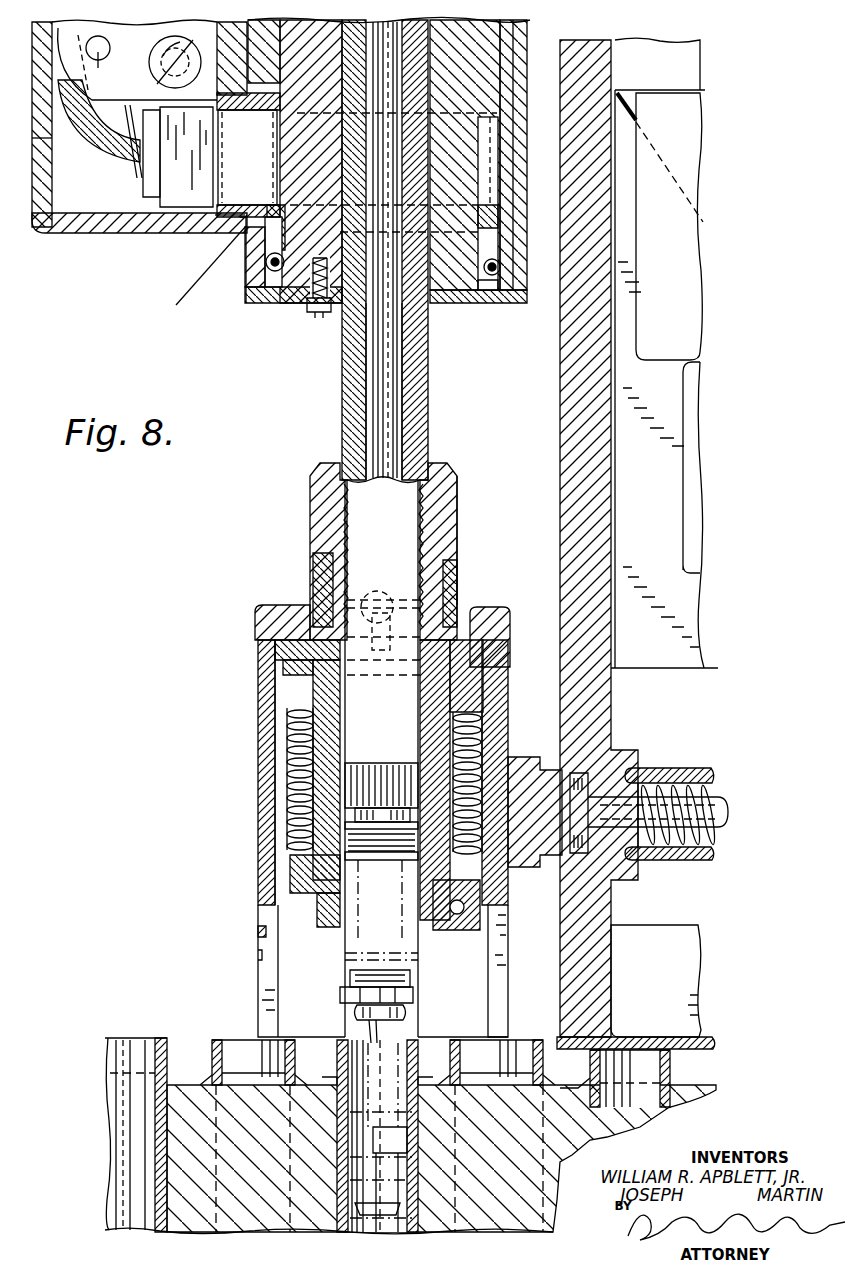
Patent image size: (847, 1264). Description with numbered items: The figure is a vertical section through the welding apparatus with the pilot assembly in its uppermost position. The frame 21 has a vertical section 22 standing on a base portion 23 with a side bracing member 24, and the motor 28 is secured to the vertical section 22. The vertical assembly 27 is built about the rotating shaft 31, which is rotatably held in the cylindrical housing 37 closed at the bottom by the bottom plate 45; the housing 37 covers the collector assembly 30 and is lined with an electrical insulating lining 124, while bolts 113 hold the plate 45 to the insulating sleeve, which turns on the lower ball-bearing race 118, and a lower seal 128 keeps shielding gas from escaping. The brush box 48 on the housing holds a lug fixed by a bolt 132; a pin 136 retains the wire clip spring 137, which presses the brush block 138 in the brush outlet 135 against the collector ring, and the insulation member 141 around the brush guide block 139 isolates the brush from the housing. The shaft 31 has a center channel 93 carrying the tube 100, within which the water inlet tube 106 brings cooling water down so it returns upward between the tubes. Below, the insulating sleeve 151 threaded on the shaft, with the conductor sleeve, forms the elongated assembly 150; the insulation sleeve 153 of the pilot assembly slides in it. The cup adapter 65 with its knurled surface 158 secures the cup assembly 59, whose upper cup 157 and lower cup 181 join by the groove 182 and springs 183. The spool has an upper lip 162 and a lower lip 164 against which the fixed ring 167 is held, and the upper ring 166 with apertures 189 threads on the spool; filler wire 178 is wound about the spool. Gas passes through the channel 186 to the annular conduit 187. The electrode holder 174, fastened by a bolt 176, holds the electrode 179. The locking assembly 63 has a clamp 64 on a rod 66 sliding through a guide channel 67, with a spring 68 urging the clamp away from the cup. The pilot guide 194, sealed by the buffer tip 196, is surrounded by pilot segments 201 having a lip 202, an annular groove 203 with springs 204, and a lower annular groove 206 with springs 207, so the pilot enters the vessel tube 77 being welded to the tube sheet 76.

The frame 21 is at (622, 706).
The vertical section 22 is at (611, 503).
The base portion 23 is at (716, 1042).
The side bracing member 24 is at (682, 186).
The vertical assembly 27 is at (241, 270).
The motor 28 is at (655, 265).
The collector assembly 30 is at (217, 247).
The shaft 31 is at (415, 149).
The cylindrical housing 37 is at (527, 210).
The bottom plate 45 is at (256, 301).
The brush box 48 is at (74, 243).
The cup assembly 59 is at (258, 785).
The locking assembly 63 is at (691, 878).
The clamp 64 is at (516, 870).
The cup adapter 65 is at (255, 616).
The rod 66 is at (731, 818).
The guide channel 67 is at (713, 856).
The spring 68 is at (712, 801).
The tube sheet 76 is at (432, 1237).
The vessel tube 77 is at (415, 1135).
The center channel 93 is at (403, 327).
The tube 100 is at (405, 308).
The water inlet tube 106 is at (386, 234).
The bolt 113 is at (318, 316).
The lower ball-bearing race 118 is at (288, 305).
The electrical insulating lining 124 is at (278, 71).
The lower seal 128 is at (287, 215).
The bolt 132 is at (165, 53).
The brush outlet 135 is at (286, 113).
The pin 136 is at (99, 62).
The wire clip spring 137 is at (89, 152).
The brush block 138 is at (146, 198).
The brush guide block 139 is at (186, 275).
The insulation member 141 is at (180, 209).
The elongated assembly 150 is at (301, 555).
The insulating sleeve 151 is at (458, 515).
The insulation sleeve 153 is at (445, 580).
The upper cup 157 is at (258, 722).
The knurled surface 158 is at (510, 623).
The upper lip 162 is at (283, 680).
The lower lip 164 is at (290, 885).
The upper ring 166 is at (450, 735).
The fixed ring 167 is at (310, 866).
The electrode holder 174 is at (317, 912).
The bolt 176 is at (470, 922).
The filler wire 178 is at (290, 766).
The electrode 179 is at (362, 1040).
The lower cup 181 is at (258, 1008).
The groove 182 is at (258, 930).
The springs 183 is at (258, 955).
The channel 186 is at (315, 600).
The annular conduit 187 is at (275, 650).
The apertures 189 is at (483, 705).
The pilot guide 194 is at (378, 802).
The buffer tip 196 is at (366, 1013).
The pilot segments 201 is at (358, 953).
The lip 202 is at (452, 1044).
The annular groove 203 is at (345, 825).
The springs 204 is at (348, 842).
The lower annular groove 206 is at (352, 975).
The springs 207 is at (342, 995).